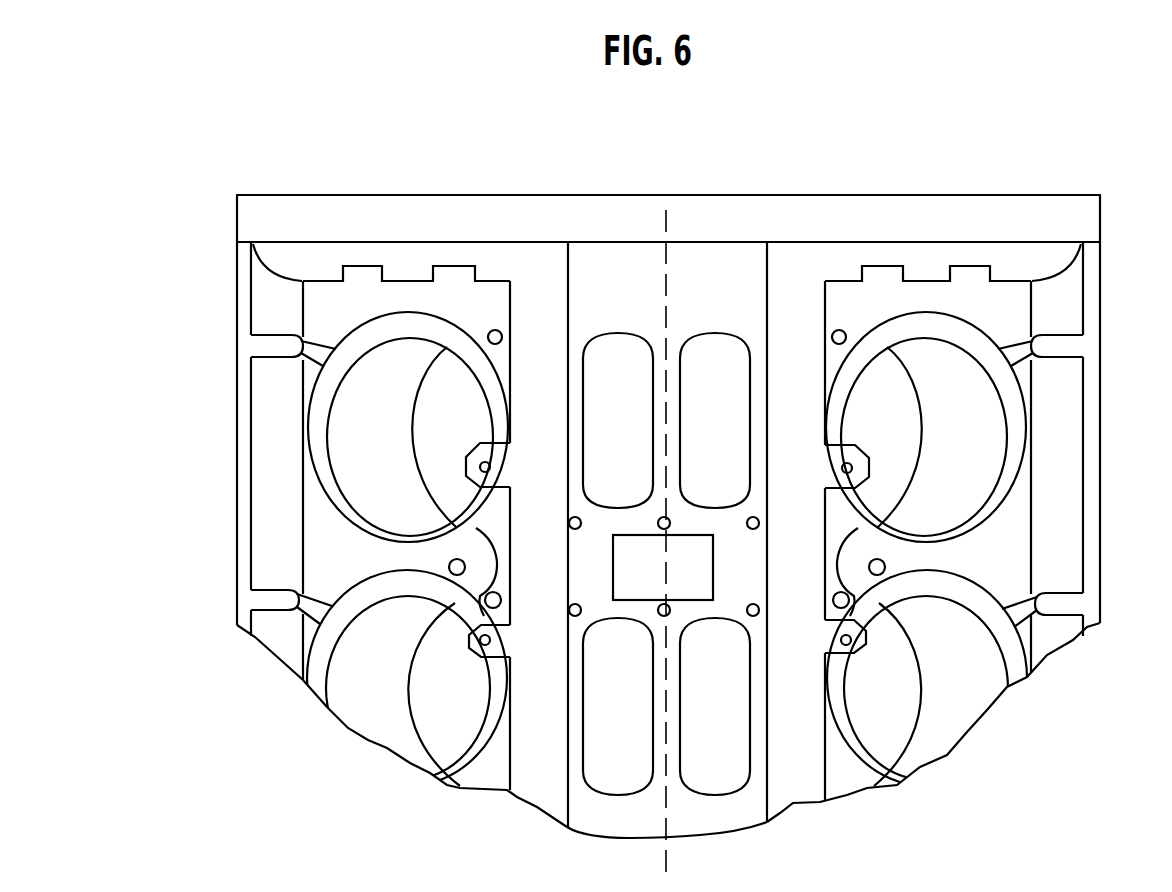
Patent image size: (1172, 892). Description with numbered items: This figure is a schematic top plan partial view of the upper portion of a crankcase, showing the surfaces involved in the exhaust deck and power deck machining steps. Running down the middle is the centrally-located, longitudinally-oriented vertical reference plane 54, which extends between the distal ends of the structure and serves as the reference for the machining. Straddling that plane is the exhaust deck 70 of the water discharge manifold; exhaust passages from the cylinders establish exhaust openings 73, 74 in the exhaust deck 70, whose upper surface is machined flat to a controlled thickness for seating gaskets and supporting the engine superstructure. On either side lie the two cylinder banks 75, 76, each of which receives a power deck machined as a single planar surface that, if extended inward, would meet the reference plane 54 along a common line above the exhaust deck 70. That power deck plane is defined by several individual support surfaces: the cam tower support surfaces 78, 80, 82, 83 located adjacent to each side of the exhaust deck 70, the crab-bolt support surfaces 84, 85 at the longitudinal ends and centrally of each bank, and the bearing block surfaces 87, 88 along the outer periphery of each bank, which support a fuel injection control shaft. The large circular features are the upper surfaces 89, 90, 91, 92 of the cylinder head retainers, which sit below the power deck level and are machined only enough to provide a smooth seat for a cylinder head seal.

The vertical reference plane 54 is at (669, 862).
The exhaust deck 70 is at (622, 282).
The exhaust opening 73 is at (627, 343).
The exhaust opening 74 is at (727, 343).
The cylinder bank 75 is at (354, 744).
The cylinder bank 76 is at (968, 758).
The cam tower support surface 78 is at (532, 482).
The cam tower support surface 80 is at (834, 483).
The cam tower support surface 82 is at (534, 656).
The cam tower support surface 83 is at (831, 659).
The crab-bolt support surface 84 is at (412, 262).
The crab-bolt support surface 85 is at (952, 262).
The bearing block surface 87 is at (258, 338).
The bearing block surface 88 is at (1075, 338).
The upper surface of cylinder head retainer 89 is at (458, 345).
The upper surface of cylinder head retainer 90 is at (880, 345).
The upper surface of cylinder head retainer 91 is at (352, 602).
The upper surface of cylinder head retainer 92 is at (968, 598).